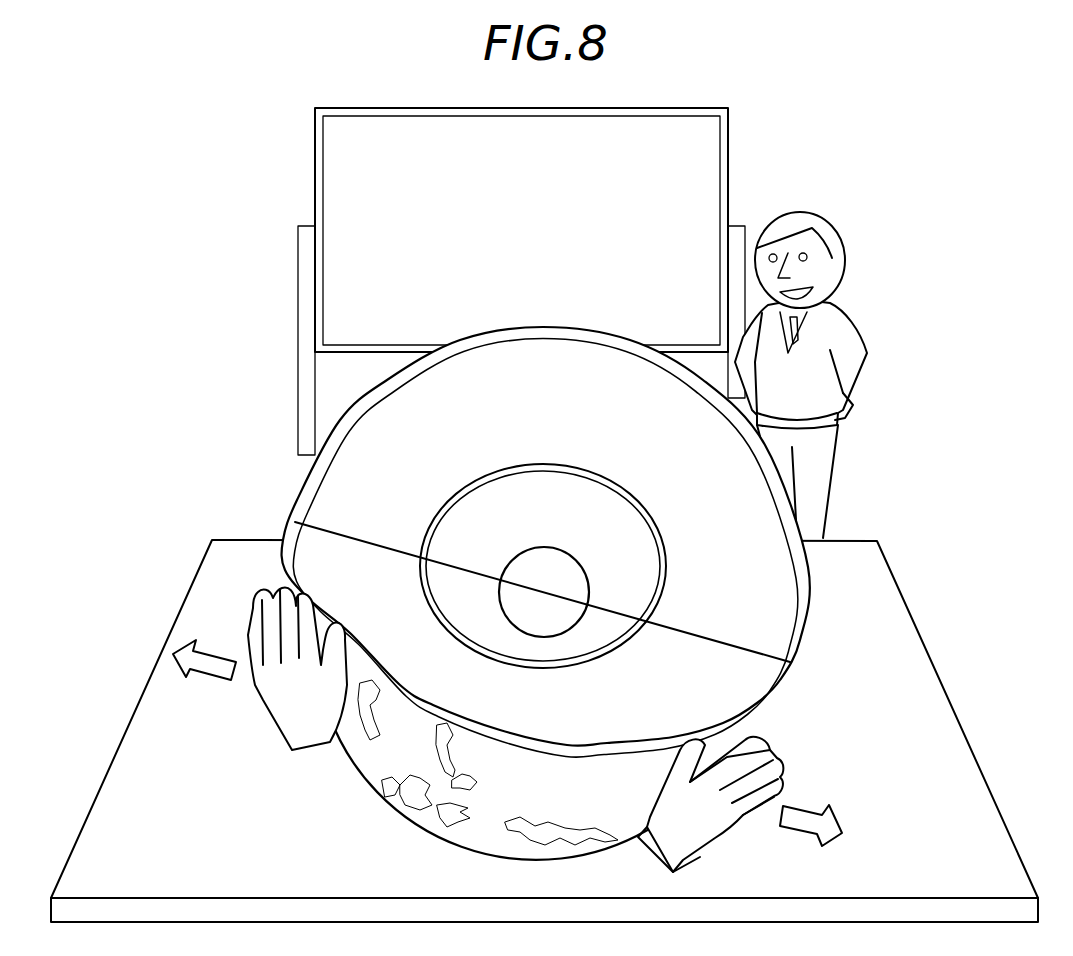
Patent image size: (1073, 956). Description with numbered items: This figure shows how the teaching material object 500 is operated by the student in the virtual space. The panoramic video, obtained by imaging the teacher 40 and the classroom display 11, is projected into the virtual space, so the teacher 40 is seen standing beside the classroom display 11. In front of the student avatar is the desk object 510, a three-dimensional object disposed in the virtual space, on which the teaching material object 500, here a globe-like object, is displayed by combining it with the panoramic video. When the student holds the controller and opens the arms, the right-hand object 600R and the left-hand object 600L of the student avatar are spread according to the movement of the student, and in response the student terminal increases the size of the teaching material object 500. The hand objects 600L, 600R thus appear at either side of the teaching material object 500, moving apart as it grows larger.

The classroom display 11 is at (578, 107).
The teacher 40 is at (823, 233).
The teaching material object 500 is at (502, 347).
The desk object 510 is at (925, 683).
The left-hand object 600L is at (285, 707).
The right-hand object 600R is at (727, 833).